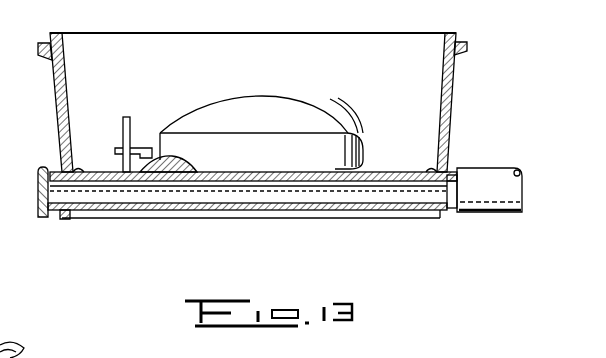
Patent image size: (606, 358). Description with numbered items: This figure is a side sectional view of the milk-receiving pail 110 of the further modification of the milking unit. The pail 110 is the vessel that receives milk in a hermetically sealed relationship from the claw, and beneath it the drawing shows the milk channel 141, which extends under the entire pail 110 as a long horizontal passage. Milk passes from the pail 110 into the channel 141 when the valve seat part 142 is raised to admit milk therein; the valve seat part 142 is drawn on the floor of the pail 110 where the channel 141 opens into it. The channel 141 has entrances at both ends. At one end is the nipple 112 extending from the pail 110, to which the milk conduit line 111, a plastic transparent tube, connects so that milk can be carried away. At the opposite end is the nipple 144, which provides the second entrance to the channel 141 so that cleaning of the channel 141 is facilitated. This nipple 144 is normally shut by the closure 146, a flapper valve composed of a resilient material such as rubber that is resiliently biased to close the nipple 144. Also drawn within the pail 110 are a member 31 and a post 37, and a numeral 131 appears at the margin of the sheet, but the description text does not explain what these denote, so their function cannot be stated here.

The milk-receiving pail 110 is at (453, 111).
The milk channel 141 is at (246, 198).
The closure 146 is at (40, 178).
The nipple 144 is at (47, 214).
The nipple 112 is at (453, 173).
The milk conduit line 111 is at (498, 193).
The roller / dome member 31 is at (268, 166).
The post 37 is at (128, 117).
The valve seat part 142 is at (172, 162).
The adjacent figure element 131 is at (0, 320).